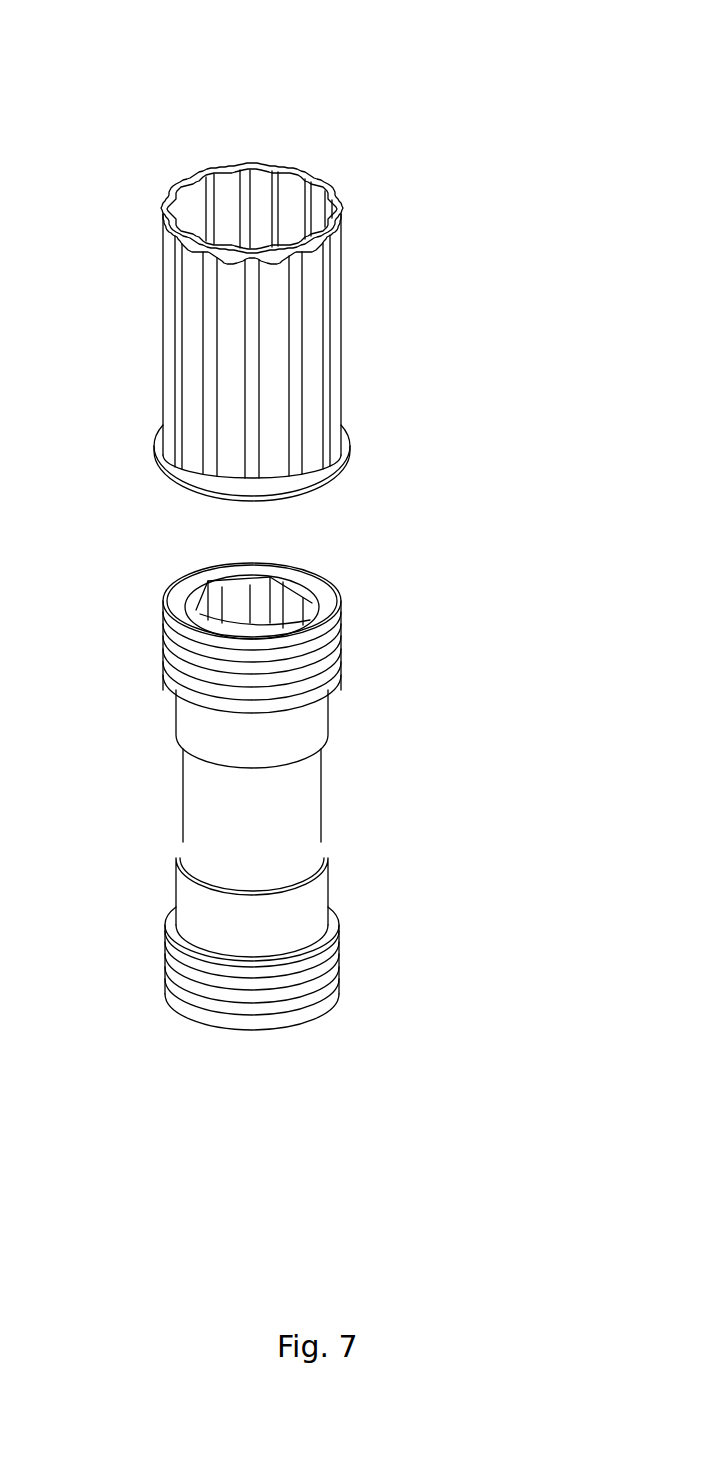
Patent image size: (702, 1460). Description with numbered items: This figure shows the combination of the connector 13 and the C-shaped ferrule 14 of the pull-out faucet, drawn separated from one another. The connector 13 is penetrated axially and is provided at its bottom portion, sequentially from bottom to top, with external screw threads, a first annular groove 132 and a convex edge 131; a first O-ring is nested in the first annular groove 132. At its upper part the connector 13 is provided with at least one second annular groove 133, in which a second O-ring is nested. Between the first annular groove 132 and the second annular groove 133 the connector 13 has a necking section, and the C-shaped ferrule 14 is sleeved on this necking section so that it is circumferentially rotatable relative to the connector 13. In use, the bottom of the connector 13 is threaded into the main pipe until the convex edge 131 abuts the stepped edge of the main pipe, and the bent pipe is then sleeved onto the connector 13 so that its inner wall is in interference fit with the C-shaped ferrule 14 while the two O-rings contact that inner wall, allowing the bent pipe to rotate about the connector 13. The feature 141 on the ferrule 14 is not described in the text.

The connector 13 is at (290, 803).
The convex edge 131 is at (172, 940).
The first annular groove 132 is at (235, 975).
The second annular groove 133 is at (302, 658).
The C-shaped ferrule 14 is at (370, 260).
The scalloped rim with ribs 141 is at (207, 172).